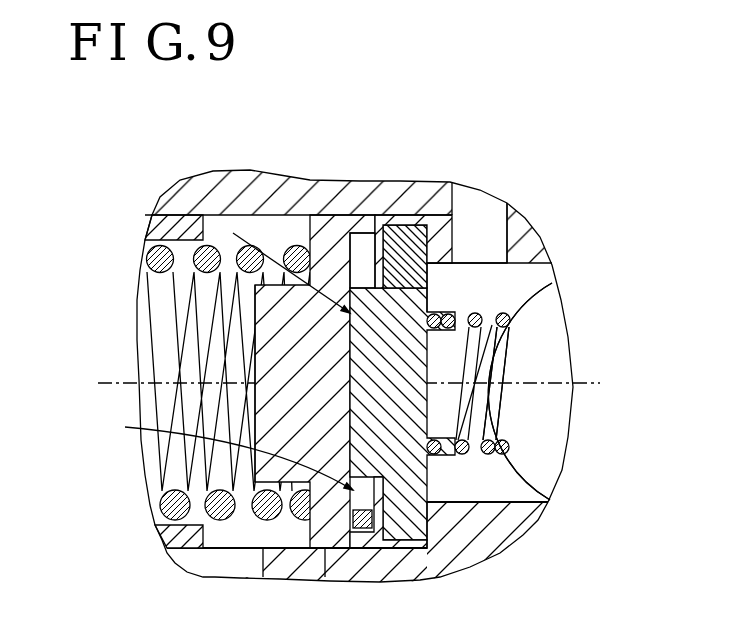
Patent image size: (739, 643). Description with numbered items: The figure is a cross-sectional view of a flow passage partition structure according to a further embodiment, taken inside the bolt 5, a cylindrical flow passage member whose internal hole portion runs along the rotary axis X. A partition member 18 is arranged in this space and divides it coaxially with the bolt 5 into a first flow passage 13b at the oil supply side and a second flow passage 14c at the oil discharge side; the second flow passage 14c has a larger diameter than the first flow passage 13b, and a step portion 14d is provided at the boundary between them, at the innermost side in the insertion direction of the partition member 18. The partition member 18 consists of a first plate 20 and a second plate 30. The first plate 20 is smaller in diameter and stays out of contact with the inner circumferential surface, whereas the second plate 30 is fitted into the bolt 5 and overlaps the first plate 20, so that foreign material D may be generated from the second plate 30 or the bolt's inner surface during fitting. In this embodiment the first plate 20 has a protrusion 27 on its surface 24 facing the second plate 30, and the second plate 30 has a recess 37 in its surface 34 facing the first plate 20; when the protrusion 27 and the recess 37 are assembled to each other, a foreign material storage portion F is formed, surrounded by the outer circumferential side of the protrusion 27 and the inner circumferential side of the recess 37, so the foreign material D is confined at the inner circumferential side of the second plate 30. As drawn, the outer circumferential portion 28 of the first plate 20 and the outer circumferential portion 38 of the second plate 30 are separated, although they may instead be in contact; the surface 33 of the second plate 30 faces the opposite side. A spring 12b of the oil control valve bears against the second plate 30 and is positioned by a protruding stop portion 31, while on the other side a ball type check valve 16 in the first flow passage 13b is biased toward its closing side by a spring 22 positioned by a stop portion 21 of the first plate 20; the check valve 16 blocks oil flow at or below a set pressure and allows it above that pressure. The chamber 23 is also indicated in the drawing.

The bolt 5 is at (208, 192).
The second flow passage 14c is at (233, 233).
The surface 24 is at (273, 282).
The protrusion 27 is at (343, 235).
The outer circumferential portion 38 is at (362, 284).
The outer circumferential portion 28 is at (408, 222).
The step portion 14d is at (452, 183).
The surface 34 is at (433, 260).
The chamber 23 is at (434, 292).
The stop portion 21 is at (492, 362).
The spring 22 is at (463, 487).
The check valve 16 is at (553, 428).
The first flow passage 13b is at (510, 480).
The first plate 20 is at (450, 495).
The partition member 18 is at (357, 525).
The recess 37 is at (398, 540).
The foreign material D is at (378, 550).
The second plate 30 is at (325, 577).
The surface 33 is at (263, 577).
The spring 12b is at (158, 505).
The foreign material storage portion F is at (230, 451).
The rotary axis X is at (338, 383).
The stop portion 31 is at (255, 335).